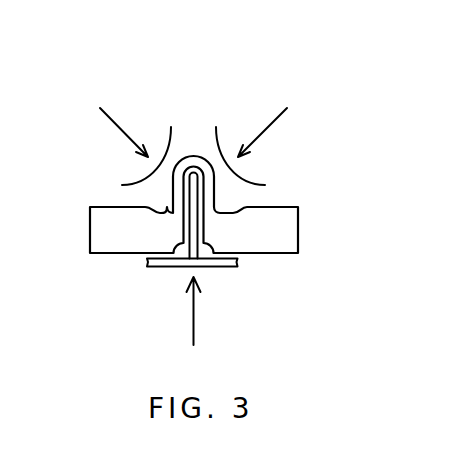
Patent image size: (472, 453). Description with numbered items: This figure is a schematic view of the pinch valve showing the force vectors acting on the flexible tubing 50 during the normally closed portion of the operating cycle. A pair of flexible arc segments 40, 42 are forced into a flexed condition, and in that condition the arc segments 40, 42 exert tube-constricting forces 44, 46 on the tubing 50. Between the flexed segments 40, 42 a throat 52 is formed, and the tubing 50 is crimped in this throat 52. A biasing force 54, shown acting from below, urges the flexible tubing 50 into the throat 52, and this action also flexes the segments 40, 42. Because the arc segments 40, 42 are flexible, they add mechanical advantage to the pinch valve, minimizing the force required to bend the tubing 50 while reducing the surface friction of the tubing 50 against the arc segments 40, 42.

The arc segment 40 is at (172, 140).
The arc segment 42 is at (218, 138).
The tube-constricting force 44 is at (118, 131).
The tube-constricting force 46 is at (281, 113).
The flexible tubing 50 is at (105, 254).
The throat 52 is at (193, 128).
The biasing force 54 is at (190, 305).